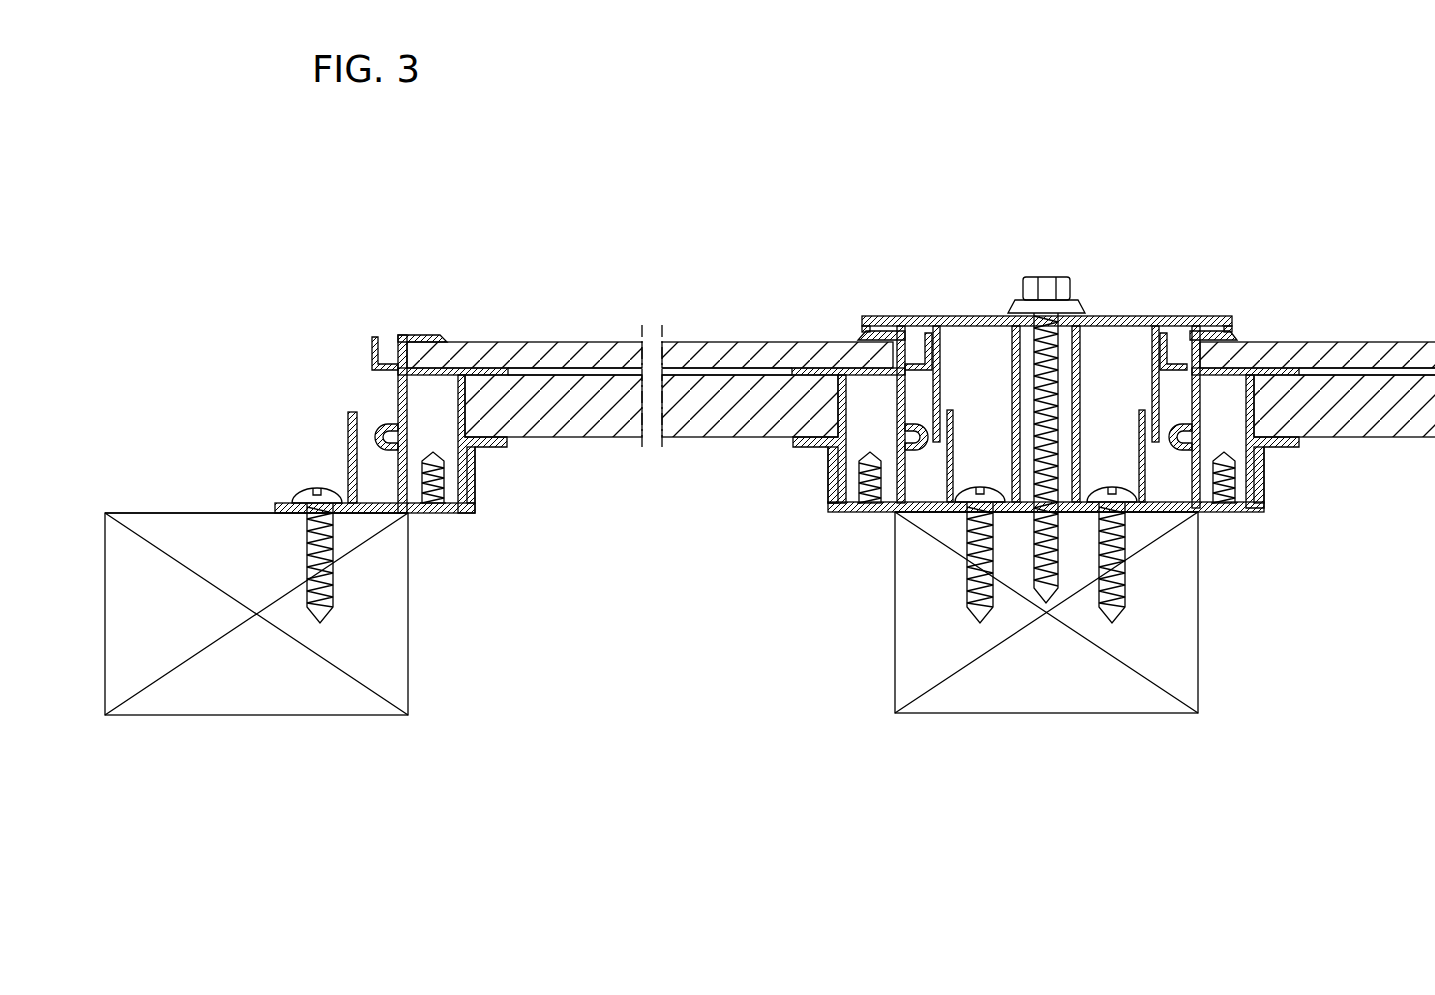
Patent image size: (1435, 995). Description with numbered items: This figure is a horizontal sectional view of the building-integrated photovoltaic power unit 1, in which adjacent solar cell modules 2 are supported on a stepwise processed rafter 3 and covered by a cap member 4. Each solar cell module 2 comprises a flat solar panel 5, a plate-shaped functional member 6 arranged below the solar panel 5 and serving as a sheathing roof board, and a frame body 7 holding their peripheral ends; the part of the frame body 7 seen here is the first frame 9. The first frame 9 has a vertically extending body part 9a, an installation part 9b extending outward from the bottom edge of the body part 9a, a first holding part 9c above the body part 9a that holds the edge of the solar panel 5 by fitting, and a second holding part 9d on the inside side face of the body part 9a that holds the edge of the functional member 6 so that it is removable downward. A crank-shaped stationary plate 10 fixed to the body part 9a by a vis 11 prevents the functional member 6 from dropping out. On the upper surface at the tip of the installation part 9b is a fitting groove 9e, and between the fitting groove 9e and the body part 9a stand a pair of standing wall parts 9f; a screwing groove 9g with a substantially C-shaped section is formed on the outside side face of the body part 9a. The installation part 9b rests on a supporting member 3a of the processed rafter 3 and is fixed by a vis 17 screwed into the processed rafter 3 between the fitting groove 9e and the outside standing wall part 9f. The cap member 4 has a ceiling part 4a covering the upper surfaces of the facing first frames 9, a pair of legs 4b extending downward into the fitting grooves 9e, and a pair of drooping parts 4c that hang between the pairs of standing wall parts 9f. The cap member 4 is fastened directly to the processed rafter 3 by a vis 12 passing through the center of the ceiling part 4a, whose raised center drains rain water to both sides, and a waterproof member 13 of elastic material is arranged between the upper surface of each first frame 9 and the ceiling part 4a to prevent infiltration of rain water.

The building-integrated photovoltaic power unit 1 is at (1252, 135).
The solar cell module 2 is at (684, 318).
The processed rafter 3 is at (254, 724).
The supporting member 3a is at (183, 513).
The cap member 4 is at (960, 310).
The ceiling part 4a is at (985, 317).
The leg 4b is at (1012, 368).
The drooping part 4c is at (941, 395).
The solar panel 5 is at (608, 342).
The functional member 6 is at (612, 428).
The frame body 7 is at (802, 457).
The first frame 9 is at (423, 328).
The body part 9a is at (398, 408).
The installation part 9b is at (357, 517).
The first holding part 9c is at (460, 347).
The second holding part 9d is at (467, 392).
The fitting groove 9e is at (290, 500).
The standing wall part 9f is at (372, 340).
The screwing groove 9g is at (376, 445).
The stationary plate 10 is at (478, 497).
The vis 11 is at (442, 505).
The vis 12 is at (1048, 275).
The waterproof member 13 is at (871, 327).
The vis 17 is at (335, 613).